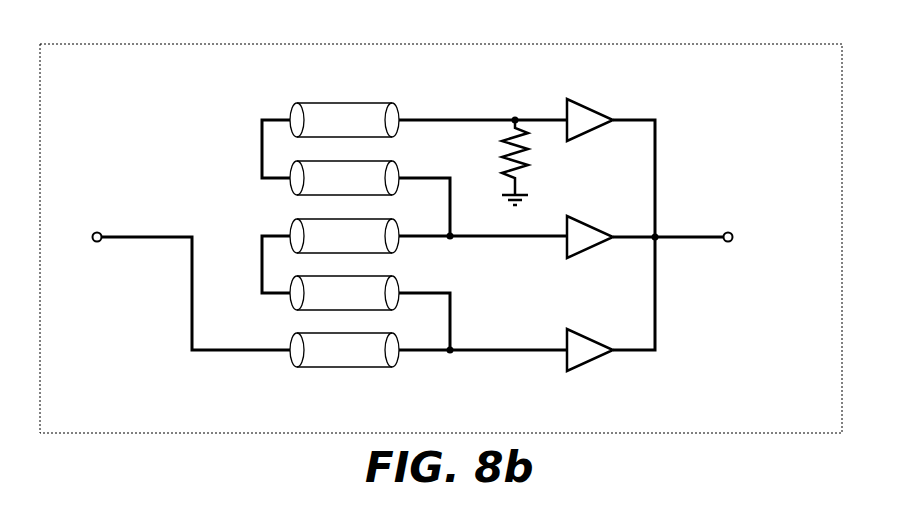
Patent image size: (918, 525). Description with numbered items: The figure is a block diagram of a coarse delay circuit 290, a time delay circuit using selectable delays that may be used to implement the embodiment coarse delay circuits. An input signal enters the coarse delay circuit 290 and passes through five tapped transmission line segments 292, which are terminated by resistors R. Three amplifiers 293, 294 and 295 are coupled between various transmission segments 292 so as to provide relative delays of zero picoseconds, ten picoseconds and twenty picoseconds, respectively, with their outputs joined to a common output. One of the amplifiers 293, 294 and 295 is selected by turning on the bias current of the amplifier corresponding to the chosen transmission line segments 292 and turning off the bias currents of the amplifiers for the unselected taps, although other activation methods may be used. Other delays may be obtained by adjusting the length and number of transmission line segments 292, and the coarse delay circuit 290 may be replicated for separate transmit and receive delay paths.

The coarse delay circuit 290 is at (103, 28).
The tapped transmission line segments 292 is at (341, 105).
The amplifier 293 is at (585, 337).
The amplifier 294 is at (585, 222).
The amplifier 295 is at (592, 106).